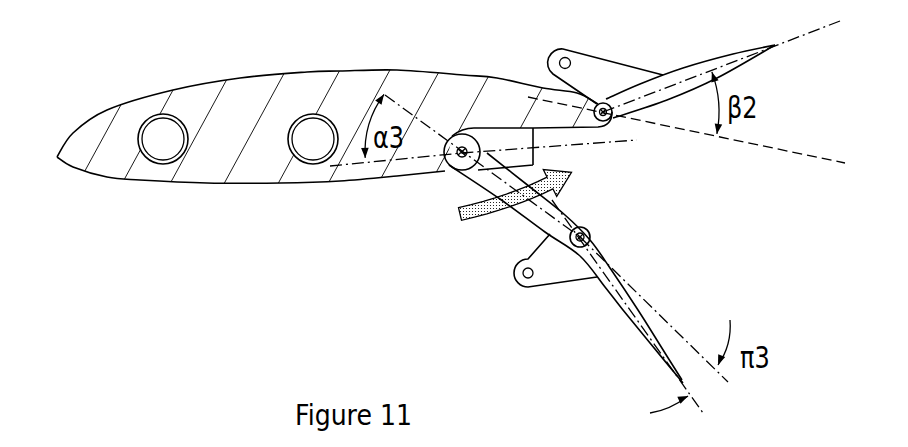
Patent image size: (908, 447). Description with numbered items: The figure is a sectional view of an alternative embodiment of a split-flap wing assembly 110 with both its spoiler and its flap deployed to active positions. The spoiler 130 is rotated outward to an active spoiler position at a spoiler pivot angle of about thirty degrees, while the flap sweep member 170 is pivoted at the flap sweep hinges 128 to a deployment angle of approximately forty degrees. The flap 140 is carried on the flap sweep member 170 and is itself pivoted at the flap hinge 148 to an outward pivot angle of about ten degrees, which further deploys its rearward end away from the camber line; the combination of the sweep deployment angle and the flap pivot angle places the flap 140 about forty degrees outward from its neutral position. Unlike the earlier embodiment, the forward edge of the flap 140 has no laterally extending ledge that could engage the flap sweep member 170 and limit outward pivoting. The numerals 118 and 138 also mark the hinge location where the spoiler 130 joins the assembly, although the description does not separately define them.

The split-flap wing assembly 110 is at (173, 55).
The flap sweep hinge 128 is at (468, 148).
The first hinge 118 is at (607, 102).
The hinge axis 138 is at (654, 60).
The spoiler 130 is at (768, 78).
The flap hinge 148 is at (591, 233).
The flap 140 is at (623, 313).
The flap sweep member 170 is at (526, 212).